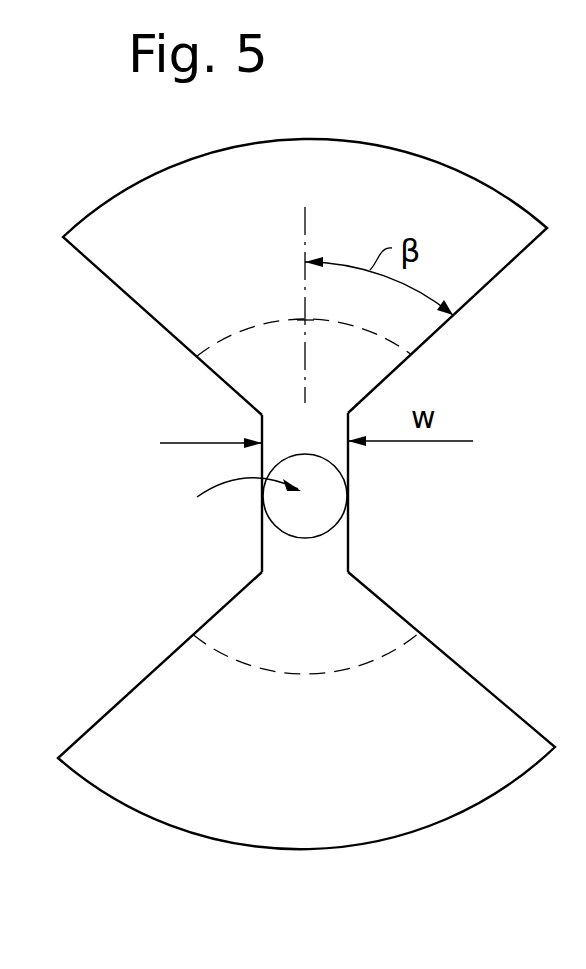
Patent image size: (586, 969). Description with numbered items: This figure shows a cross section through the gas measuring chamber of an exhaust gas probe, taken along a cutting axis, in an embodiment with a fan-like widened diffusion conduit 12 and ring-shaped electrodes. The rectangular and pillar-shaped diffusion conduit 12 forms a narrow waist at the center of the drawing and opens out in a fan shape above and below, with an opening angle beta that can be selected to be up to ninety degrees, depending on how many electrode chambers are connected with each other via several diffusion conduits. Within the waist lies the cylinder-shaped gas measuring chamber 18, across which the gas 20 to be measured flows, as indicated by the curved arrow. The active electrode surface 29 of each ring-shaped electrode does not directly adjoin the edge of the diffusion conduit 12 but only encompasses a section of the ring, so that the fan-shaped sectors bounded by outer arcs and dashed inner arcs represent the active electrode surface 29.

The active electrode surface 29 is at (470, 200).
The diffusion conduit 12 is at (328, 562).
The gas measuring chamber 18 is at (327, 508).
The gas to be measured 20 is at (222, 487).